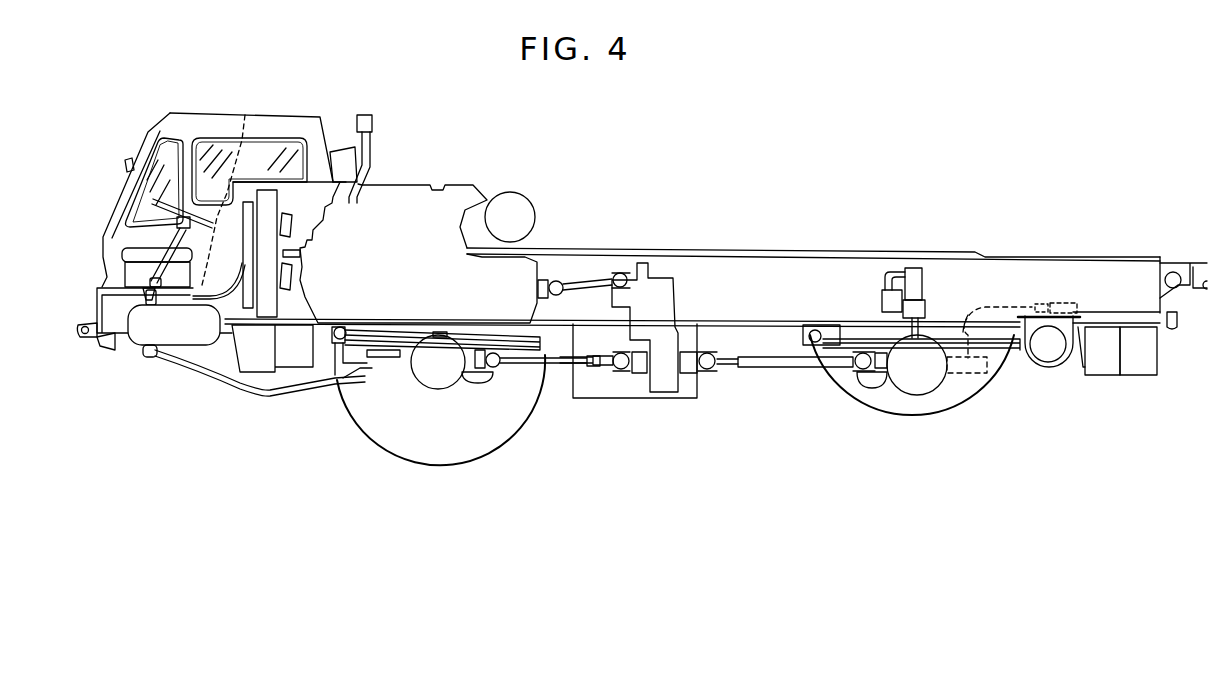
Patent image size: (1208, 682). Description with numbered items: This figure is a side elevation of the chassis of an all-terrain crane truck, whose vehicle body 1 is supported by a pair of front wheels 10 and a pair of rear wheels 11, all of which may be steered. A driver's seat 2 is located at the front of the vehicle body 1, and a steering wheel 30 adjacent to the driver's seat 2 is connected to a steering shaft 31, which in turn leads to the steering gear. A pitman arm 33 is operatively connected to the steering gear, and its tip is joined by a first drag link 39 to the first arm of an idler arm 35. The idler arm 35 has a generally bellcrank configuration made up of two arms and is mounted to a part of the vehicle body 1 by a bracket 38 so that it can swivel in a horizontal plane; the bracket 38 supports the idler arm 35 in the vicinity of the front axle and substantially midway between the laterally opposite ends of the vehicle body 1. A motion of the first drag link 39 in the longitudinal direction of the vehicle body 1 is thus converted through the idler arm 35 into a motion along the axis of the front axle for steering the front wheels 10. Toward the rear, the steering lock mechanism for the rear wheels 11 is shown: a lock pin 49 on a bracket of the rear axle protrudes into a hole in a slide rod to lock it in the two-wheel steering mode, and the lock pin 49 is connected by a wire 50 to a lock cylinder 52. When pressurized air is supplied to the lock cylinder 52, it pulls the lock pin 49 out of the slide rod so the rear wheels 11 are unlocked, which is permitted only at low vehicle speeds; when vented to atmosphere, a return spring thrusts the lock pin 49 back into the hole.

The vehicle body 1 is at (690, 246).
The driver's seat 2 is at (273, 112).
The front wheels 10 is at (498, 435).
The rear wheels 11 is at (1003, 406).
The steering wheel 30 is at (245, 115).
The steering shaft 31 is at (167, 243).
The pitman arm 33 is at (145, 348).
The idler arm 35 is at (372, 367).
The bracket 38 is at (330, 365).
The first drag link 39 is at (260, 393).
The lock pin 49 is at (968, 315).
The wire 50 is at (1023, 307).
The lock cylinder 52 is at (1072, 304).